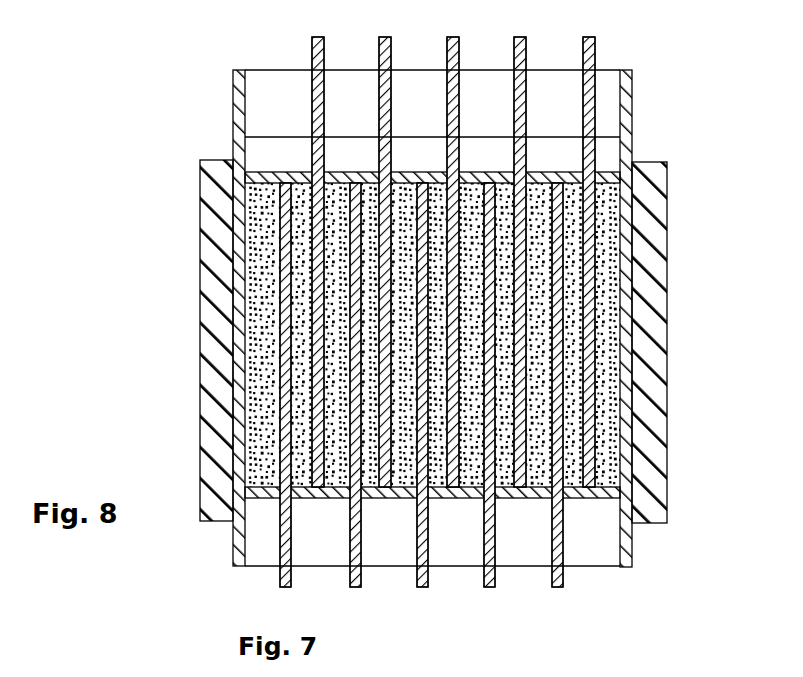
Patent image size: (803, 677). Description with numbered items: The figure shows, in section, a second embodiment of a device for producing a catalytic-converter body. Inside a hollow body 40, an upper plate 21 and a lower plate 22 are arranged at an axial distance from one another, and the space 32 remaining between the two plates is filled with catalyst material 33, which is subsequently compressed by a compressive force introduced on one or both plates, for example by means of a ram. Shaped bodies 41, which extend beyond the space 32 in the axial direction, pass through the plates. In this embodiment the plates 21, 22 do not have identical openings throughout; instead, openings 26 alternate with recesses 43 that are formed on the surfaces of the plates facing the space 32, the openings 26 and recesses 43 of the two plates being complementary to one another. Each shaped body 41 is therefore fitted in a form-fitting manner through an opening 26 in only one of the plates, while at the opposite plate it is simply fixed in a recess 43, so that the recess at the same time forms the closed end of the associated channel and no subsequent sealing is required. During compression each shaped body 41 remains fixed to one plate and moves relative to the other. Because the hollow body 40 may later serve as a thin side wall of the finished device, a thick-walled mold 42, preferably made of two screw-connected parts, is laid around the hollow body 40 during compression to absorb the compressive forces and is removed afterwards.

The upper plate 21 is at (627, 158).
The lower plate 22 is at (667, 523).
The openings 26 is at (278, 498).
The space 32 is at (256, 346).
The catalyst material 33 is at (280, 419).
The hollow body 40 is at (630, 550).
The shaped bodies 41 is at (582, 613).
The mold 42 is at (232, 103).
The recesses 43 is at (358, 178).